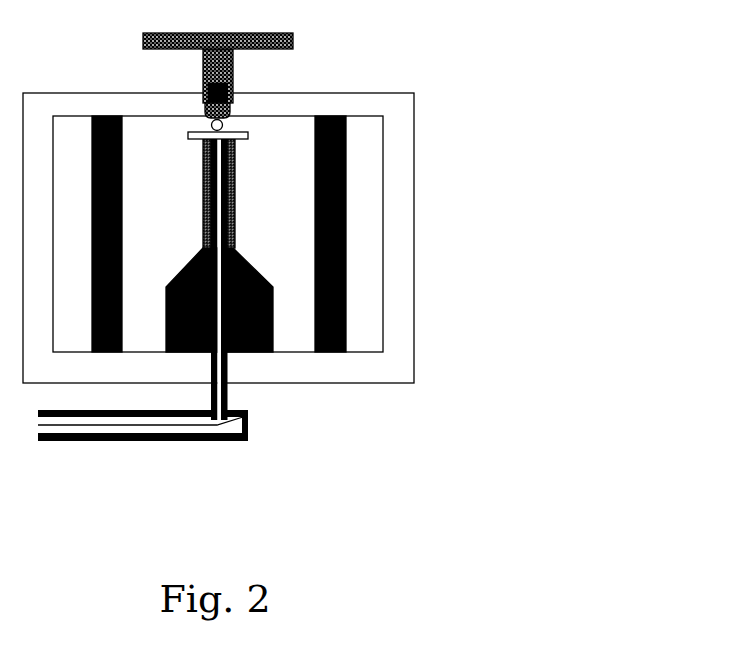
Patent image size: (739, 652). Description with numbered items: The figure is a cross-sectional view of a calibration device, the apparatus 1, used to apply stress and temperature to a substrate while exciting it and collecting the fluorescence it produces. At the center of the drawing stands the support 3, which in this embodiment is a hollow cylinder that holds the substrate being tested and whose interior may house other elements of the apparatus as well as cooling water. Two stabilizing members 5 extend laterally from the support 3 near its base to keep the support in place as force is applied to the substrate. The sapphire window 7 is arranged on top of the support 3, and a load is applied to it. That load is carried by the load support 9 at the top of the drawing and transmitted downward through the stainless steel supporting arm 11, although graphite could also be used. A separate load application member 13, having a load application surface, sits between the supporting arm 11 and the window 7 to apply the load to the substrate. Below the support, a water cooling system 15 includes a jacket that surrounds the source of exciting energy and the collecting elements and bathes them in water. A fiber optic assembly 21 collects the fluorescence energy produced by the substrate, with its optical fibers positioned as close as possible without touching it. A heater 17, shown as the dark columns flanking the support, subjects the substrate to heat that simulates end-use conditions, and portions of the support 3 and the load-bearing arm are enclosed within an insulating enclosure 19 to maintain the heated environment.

The apparatus 1 is at (493, 142).
The support 3 is at (233, 187).
The stabilizing members 5 is at (191, 262).
The sapphire window 7 is at (238, 140).
The load support 9 is at (142, 43).
The supporting arm 11 is at (203, 70).
The load application member 13 is at (225, 126).
The water cooling system 15 is at (107, 441).
The heater 17 is at (331, 116).
The insulating enclosure 19 is at (397, 93).
The fiber optic assembly 21 is at (243, 417).